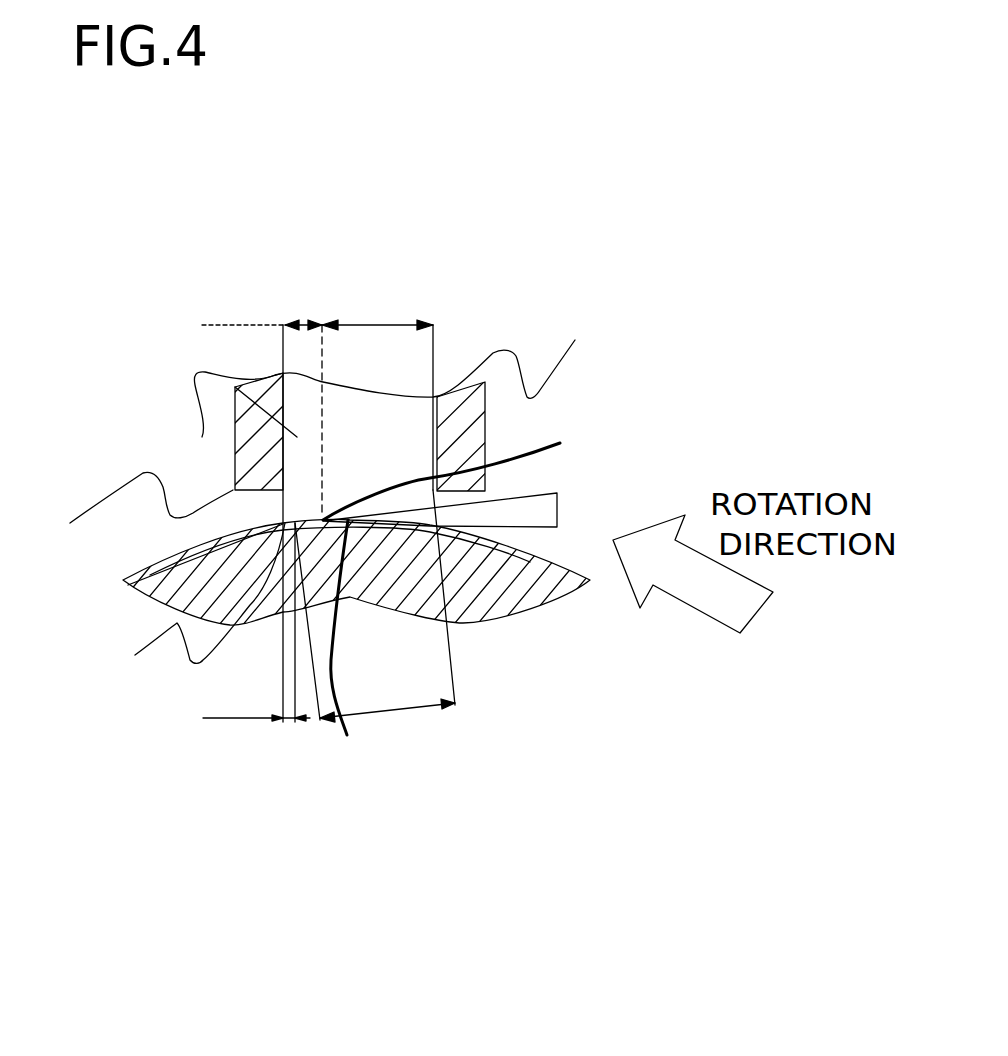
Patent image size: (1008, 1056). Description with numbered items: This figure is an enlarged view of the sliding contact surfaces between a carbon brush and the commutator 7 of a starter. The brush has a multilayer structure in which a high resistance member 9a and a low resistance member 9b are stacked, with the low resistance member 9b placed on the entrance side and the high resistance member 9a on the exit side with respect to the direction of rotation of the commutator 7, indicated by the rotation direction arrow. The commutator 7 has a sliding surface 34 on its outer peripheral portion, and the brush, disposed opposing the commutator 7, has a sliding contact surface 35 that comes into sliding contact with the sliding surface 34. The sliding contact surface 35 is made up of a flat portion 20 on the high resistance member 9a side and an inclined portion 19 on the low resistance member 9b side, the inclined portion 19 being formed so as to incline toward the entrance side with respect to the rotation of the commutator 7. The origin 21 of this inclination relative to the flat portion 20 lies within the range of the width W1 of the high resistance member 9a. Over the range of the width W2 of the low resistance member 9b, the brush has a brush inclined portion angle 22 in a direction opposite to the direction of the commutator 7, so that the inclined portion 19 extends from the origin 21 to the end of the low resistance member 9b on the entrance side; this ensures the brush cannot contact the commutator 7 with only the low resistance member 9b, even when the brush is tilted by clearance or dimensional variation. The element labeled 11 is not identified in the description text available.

The commutator 7 is at (502, 590).
The high resistance member 9a is at (202, 437).
The low resistance member 9b is at (483, 412).
The fixed blade 11 is at (129, 510).
The inclined portion 19 is at (383, 713).
The flat portion 20 is at (288, 720).
The origin 21 is at (184, 607).
The brush inclined portion angle 22 is at (557, 500).
The sliding surface 34 is at (347, 735).
The sliding contact surface 35 is at (560, 443).
The width of the high resistance member W1 is at (310, 322).
The width of the low resistance member W2 is at (395, 322).